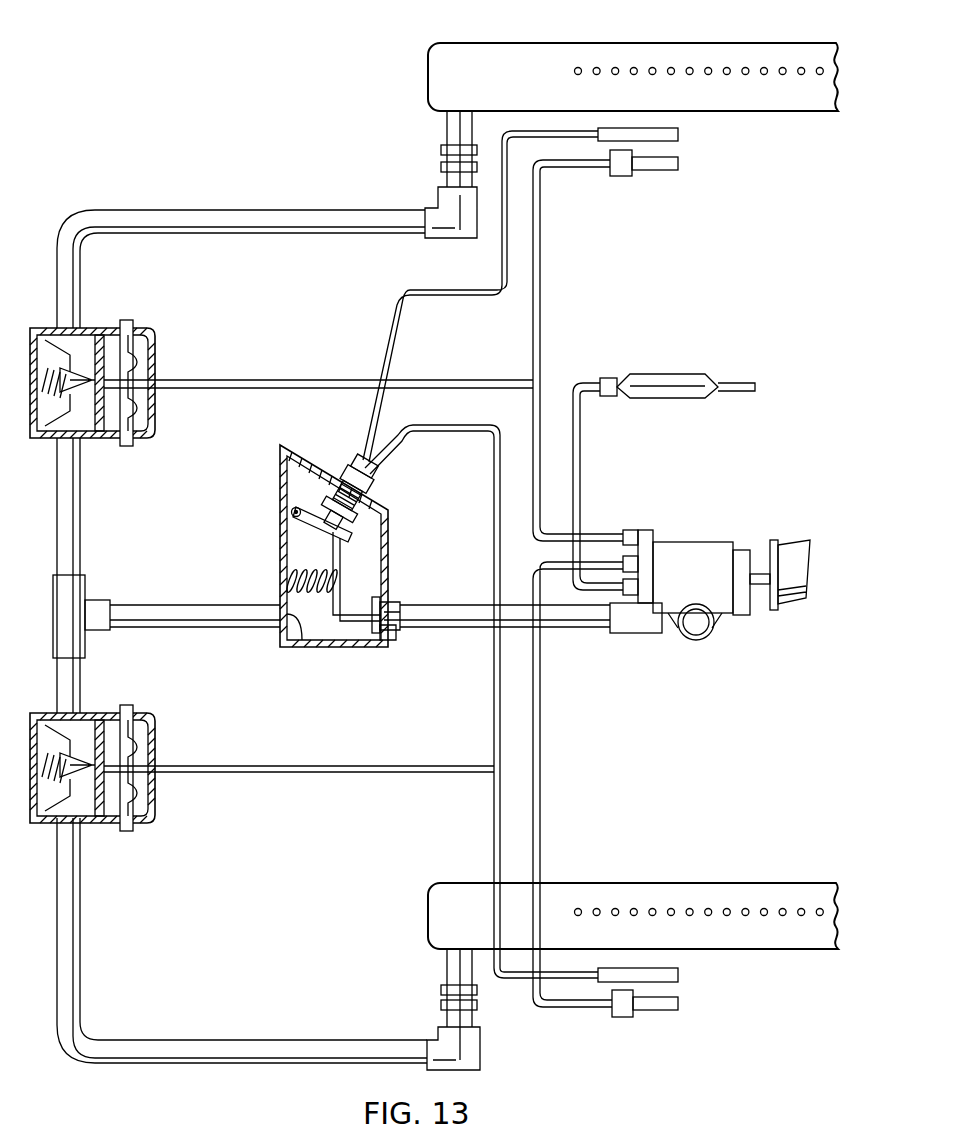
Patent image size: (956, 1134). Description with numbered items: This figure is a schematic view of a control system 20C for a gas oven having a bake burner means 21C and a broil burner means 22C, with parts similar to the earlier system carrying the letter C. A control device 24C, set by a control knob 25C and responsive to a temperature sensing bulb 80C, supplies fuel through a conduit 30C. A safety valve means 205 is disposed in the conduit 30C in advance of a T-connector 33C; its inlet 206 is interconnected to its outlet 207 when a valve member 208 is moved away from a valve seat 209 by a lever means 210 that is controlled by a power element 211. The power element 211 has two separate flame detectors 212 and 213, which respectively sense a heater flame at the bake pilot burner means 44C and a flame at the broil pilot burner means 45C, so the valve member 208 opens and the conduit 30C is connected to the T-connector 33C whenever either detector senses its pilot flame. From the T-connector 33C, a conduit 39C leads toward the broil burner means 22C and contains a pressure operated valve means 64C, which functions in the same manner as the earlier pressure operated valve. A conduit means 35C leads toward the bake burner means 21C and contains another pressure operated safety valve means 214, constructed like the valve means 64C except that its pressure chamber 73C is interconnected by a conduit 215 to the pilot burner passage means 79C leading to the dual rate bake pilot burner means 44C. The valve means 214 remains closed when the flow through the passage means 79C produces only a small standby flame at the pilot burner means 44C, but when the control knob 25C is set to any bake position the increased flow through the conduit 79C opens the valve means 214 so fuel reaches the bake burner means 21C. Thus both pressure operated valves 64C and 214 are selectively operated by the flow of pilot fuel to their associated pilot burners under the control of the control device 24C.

The control system 20C is at (702, 282).
The bake burner means 21C is at (785, 888).
The broil burner means 22C is at (782, 52).
The control device 24C is at (693, 537).
The control knob 25C is at (787, 542).
The conduit 30C is at (193, 628).
The T-connector 33C is at (90, 597).
The conduit means 35C is at (78, 916).
The conduit 39C is at (80, 290).
The bake pilot burner means 44C is at (680, 1004).
The broil pilot burner means 45C is at (680, 164).
The pressure operated valve means 64C is at (160, 338).
The pressure chamber 73C is at (145, 800).
The pilot burner passage means 79C is at (541, 741).
The temperature sensing bulb 80C is at (675, 375).
The safety valve means 205 is at (393, 518).
The inlet 206 is at (300, 621).
The outlet 207 is at (393, 631).
The valve member 208 is at (372, 634).
The valve seat 209 is at (382, 607).
The lever means 210 is at (337, 560).
The power element 211 is at (296, 507).
The flame detector 212 is at (680, 976).
The flame detector 213 is at (680, 134).
The pressure operated safety valve means 214 is at (135, 768).
The conduit 215 is at (365, 773).